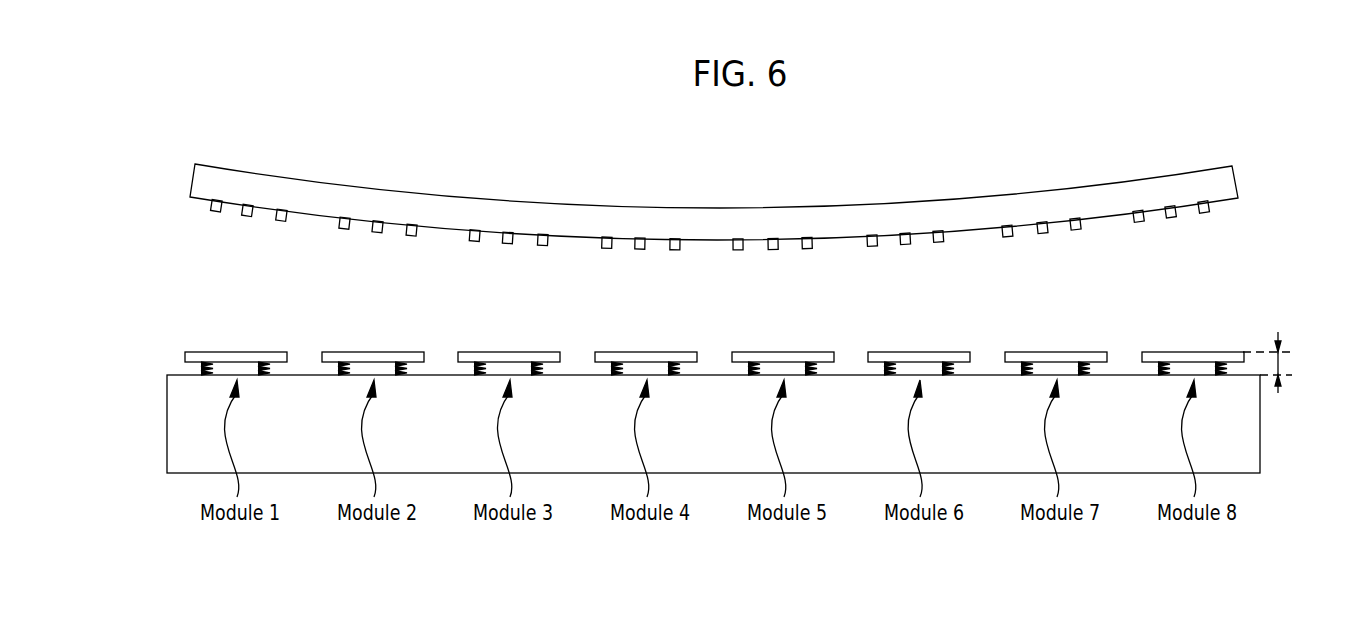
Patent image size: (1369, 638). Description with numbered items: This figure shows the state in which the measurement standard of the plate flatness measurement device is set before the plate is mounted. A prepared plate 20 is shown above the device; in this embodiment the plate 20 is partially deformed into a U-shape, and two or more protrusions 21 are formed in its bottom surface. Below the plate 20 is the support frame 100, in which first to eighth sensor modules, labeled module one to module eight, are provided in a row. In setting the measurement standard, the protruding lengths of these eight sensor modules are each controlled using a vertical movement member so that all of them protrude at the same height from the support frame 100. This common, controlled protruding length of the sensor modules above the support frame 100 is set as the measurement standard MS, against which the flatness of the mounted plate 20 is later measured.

The plate 20 is at (1227, 181).
The protrusions 21 is at (1208, 205).
The support frame 100 is at (1252, 447).
The measurement standard MS is at (1281, 362).